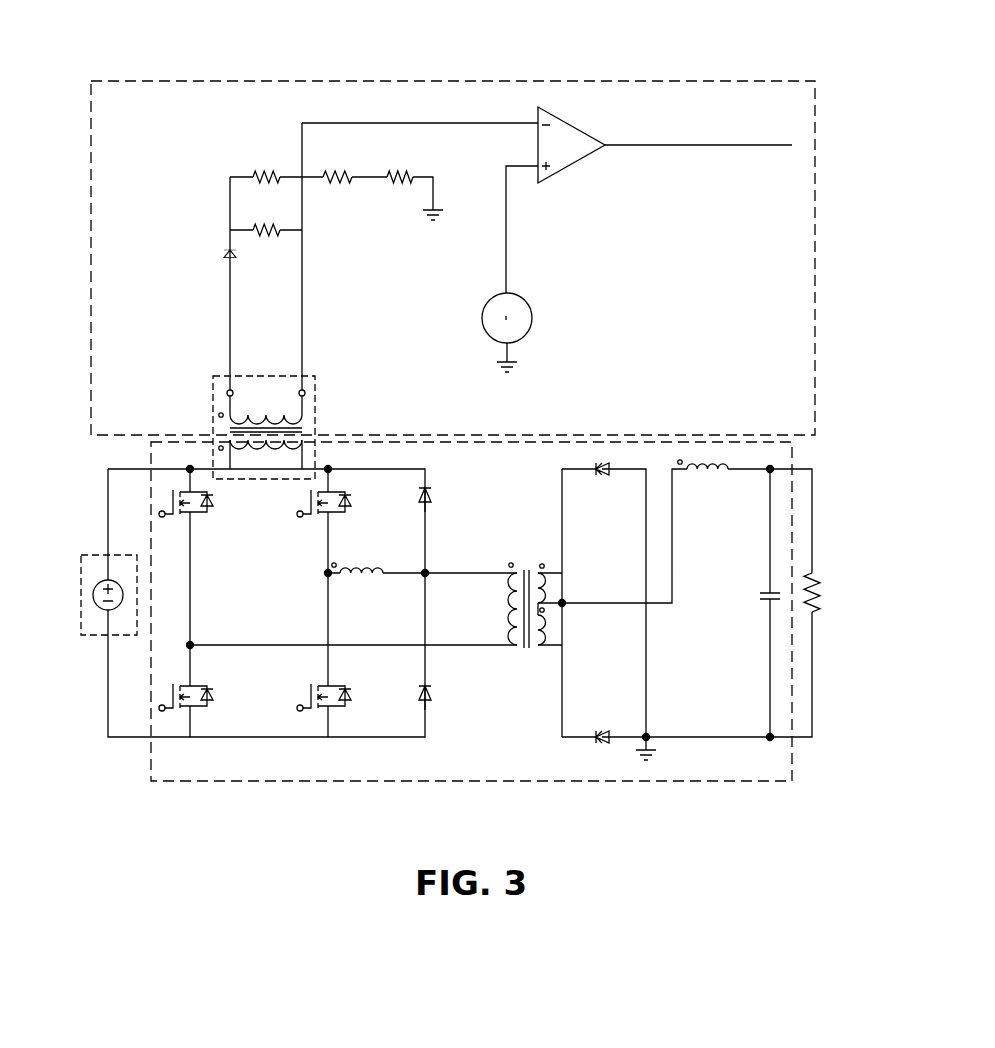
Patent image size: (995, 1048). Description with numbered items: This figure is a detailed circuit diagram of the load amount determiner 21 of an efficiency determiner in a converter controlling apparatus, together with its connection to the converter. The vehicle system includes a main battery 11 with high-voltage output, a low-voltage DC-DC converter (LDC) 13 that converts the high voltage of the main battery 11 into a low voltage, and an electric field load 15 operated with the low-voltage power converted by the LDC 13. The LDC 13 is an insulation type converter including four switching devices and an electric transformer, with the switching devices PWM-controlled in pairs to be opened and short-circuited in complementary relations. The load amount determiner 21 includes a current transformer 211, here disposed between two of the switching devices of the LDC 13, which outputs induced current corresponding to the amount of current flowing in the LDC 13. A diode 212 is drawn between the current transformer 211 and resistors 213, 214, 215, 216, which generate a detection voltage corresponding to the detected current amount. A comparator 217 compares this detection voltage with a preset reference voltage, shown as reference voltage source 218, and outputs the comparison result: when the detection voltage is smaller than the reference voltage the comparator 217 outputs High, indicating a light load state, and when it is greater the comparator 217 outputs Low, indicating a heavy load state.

The main battery 11 is at (88, 555).
The low-voltage DC-DC converter (LDC) 13 is at (472, 782).
The electric field load 15 is at (820, 590).
The load amount determiner 21 is at (690, 81).
The current transformer 211 is at (214, 376).
The diode 212 is at (222, 257).
The resistor 213 is at (258, 222).
The resistor 214 is at (262, 170).
The resistor 215 is at (337, 187).
The resistor 216 is at (397, 187).
The comparator 217 is at (563, 113).
The reference voltage source Vref 218 is at (533, 318).